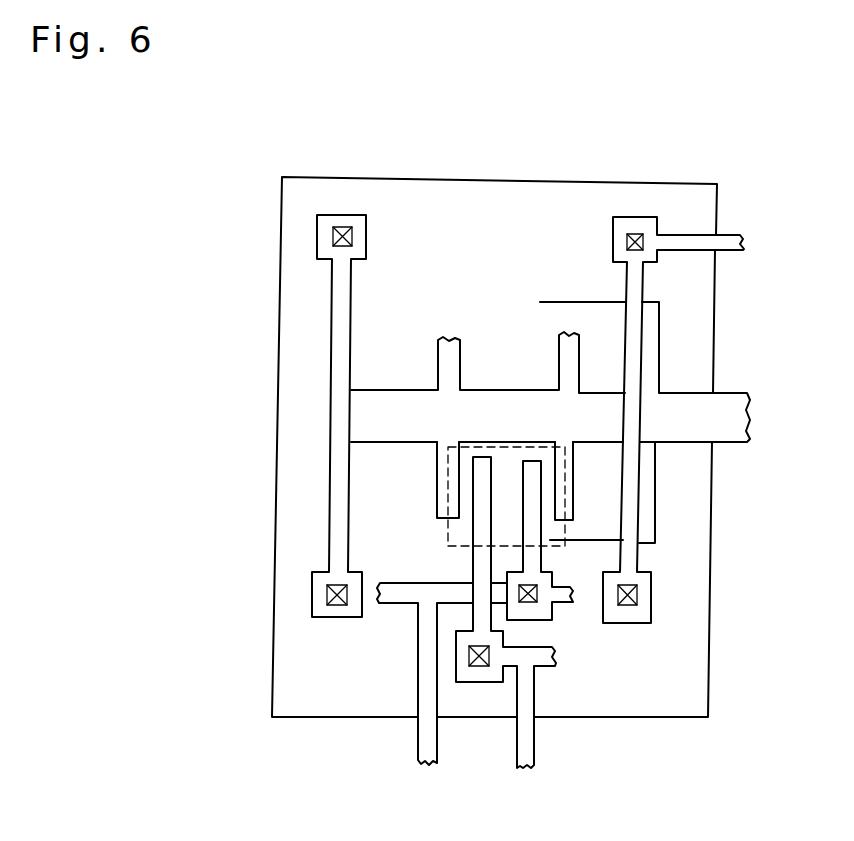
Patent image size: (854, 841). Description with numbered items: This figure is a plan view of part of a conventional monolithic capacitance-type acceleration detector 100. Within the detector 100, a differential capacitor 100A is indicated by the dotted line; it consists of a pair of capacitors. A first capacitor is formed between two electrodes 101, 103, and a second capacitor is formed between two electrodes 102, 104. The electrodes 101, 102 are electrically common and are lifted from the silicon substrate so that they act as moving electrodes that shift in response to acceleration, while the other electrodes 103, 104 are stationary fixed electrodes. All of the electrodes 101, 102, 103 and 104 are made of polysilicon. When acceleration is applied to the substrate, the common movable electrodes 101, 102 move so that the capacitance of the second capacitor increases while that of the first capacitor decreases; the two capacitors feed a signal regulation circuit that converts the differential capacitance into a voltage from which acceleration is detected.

The acceleration detector 100 is at (491, 178).
The differential capacitor 100A is at (503, 450).
The electrode 101 is at (573, 481).
The electrode 102 is at (437, 487).
The electrode 103 is at (541, 556).
The electrode 104 is at (472, 567).